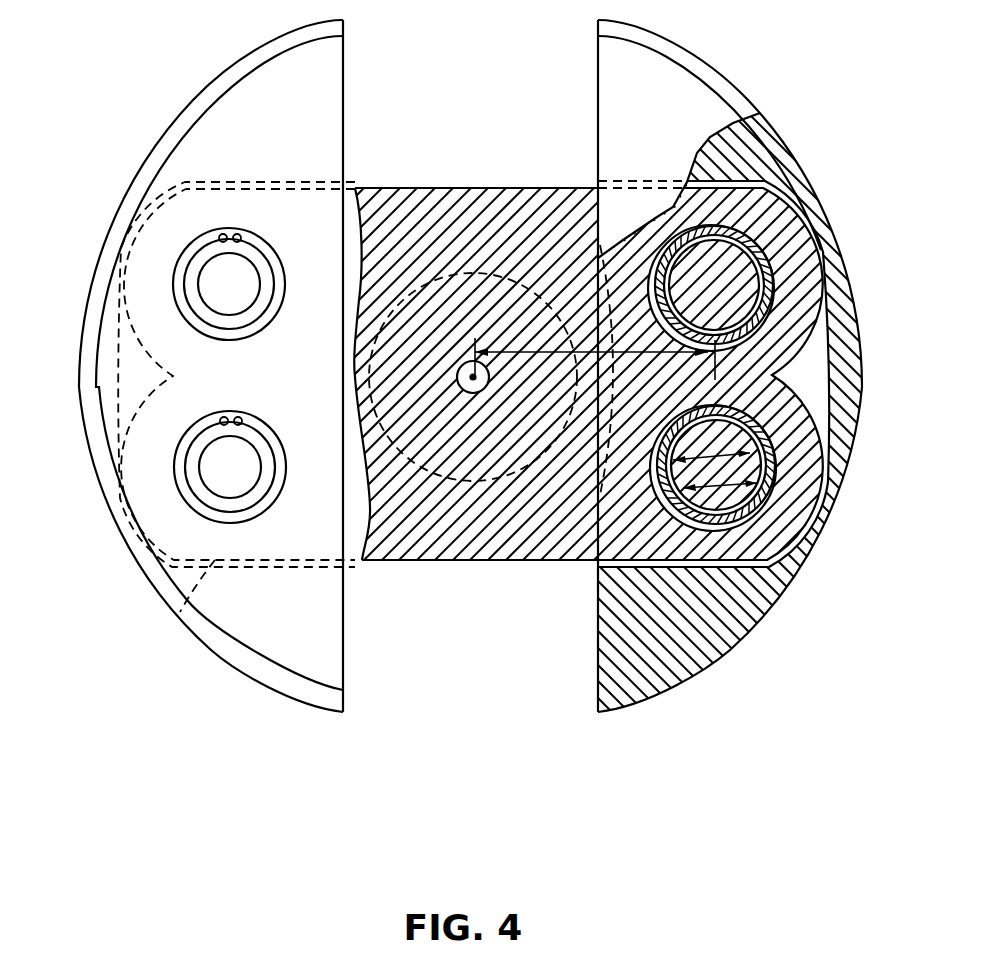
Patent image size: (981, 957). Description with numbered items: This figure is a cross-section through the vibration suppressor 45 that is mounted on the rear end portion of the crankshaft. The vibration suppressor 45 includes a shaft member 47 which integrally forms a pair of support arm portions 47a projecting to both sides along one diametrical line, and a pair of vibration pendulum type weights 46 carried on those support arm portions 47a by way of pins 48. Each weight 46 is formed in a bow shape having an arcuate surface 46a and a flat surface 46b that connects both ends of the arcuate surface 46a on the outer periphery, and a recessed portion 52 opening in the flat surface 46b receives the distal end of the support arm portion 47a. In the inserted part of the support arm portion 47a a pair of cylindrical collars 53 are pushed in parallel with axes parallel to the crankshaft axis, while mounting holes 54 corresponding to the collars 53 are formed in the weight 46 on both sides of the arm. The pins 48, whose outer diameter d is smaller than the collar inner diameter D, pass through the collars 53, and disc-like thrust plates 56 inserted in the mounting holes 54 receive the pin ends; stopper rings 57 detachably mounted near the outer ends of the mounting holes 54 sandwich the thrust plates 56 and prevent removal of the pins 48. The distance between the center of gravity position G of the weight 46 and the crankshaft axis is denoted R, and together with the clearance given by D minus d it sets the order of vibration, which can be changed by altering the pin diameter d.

The vibration suppressor 45 is at (653, 713).
The vibration pendulum type weight 46 is at (227, 600).
The arcuate surface 46a is at (270, 690).
The flat surface 46b is at (346, 637).
The shaft member 47 is at (500, 273).
The support arm portion 47a is at (190, 601).
The pin 48 is at (251, 293).
The recessed portion 52 is at (125, 300).
The cylindrical collar 53 is at (715, 226).
The mounting hole 54 is at (247, 250).
The thrust plate 56 is at (273, 290).
The stopper ring 57 is at (273, 257).
The distance R is at (583, 349).
The position of center of gravity G is at (717, 380).
The inner diameter of collar D is at (700, 436).
The outer diameter of pin d is at (695, 410).